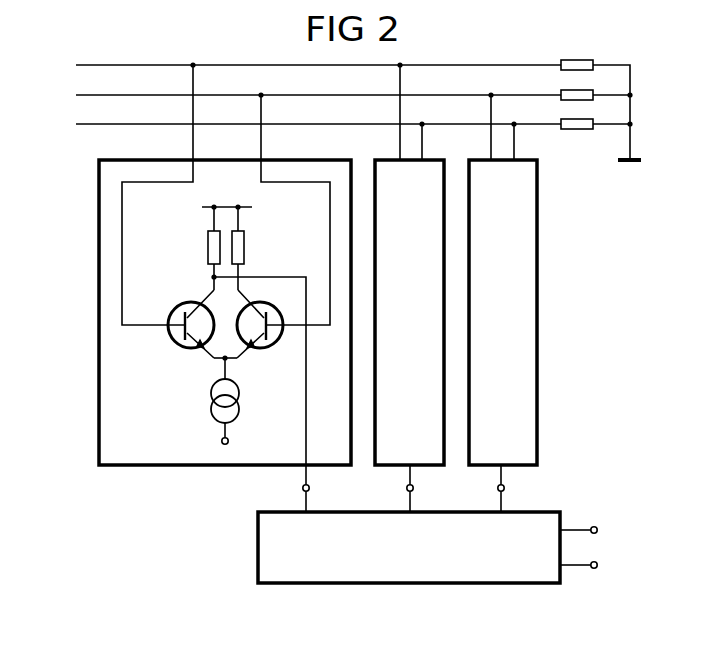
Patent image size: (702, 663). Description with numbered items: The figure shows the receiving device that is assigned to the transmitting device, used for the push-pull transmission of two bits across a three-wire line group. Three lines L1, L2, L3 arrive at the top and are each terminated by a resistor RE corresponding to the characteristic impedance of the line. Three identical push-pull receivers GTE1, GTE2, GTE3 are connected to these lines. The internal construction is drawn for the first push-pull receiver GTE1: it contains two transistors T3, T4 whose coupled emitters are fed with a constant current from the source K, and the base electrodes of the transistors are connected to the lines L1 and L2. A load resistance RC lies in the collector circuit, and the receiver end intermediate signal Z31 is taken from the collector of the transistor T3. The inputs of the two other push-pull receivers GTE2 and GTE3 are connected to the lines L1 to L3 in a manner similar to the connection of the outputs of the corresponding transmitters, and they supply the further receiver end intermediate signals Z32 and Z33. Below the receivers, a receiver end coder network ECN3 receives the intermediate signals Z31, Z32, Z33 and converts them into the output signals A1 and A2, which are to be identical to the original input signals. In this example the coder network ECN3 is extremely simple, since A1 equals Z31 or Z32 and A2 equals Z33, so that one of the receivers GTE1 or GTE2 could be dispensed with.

The line L1 is at (303, 66).
The line L2 is at (303, 96).
The line L3 is at (303, 125).
The terminating resistors RE is at (601, 95).
The push-pull receiver GTE1 is at (99, 305).
The push-pull receiver GTE2 is at (409, 288).
The push-pull receiver GTE3 is at (503, 303).
The load resistance RC is at (216, 247).
The transistor T3 is at (191, 315).
The transistor T4 is at (268, 320).
The constant current source K is at (234, 401).
The receiver end intermediate signal Z31 is at (324, 491).
The receiver end intermediate signal Z32 is at (429, 491).
The receiver end intermediate signal Z33 is at (521, 491).
The receiver end coder network ECN3 is at (223, 558).
The output signal A1 is at (592, 532).
The output signal A2 is at (592, 567).